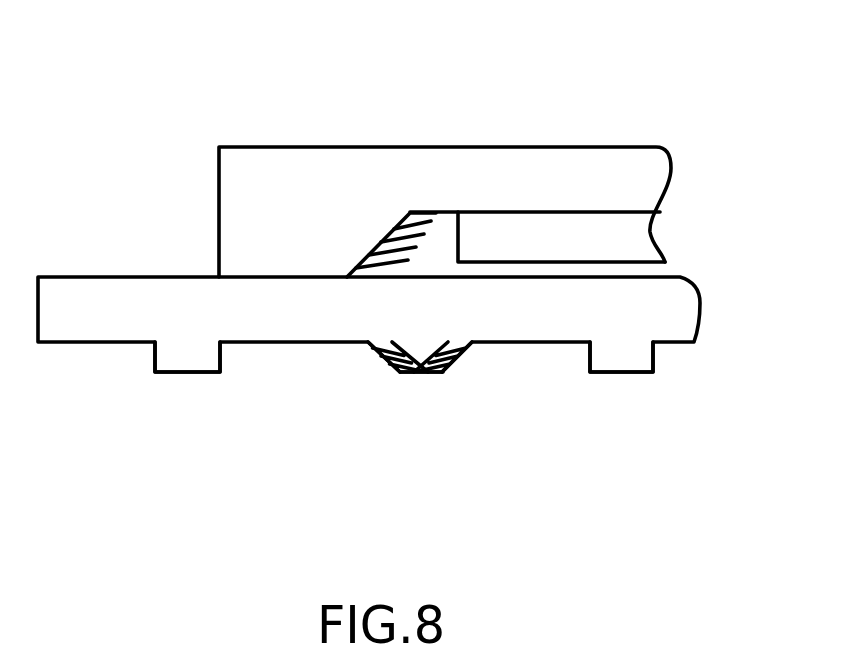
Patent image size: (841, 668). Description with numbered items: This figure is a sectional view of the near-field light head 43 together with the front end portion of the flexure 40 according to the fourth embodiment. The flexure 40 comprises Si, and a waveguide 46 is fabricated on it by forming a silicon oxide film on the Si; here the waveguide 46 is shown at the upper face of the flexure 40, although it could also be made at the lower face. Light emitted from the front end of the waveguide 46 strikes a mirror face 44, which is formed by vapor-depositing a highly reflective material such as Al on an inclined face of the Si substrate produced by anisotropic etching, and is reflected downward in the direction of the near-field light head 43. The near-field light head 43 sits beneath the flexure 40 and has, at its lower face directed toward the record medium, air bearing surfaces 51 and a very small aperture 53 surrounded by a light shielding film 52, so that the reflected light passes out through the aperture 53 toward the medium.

The flexure 40 is at (400, 172).
The near-field light head 43 is at (180, 295).
The mirror face 44 is at (398, 277).
The waveguide 46 is at (628, 243).
The air bearing surfaces 51 is at (200, 353).
The light shielding film 52 is at (388, 365).
The very small aperture 53 is at (420, 372).